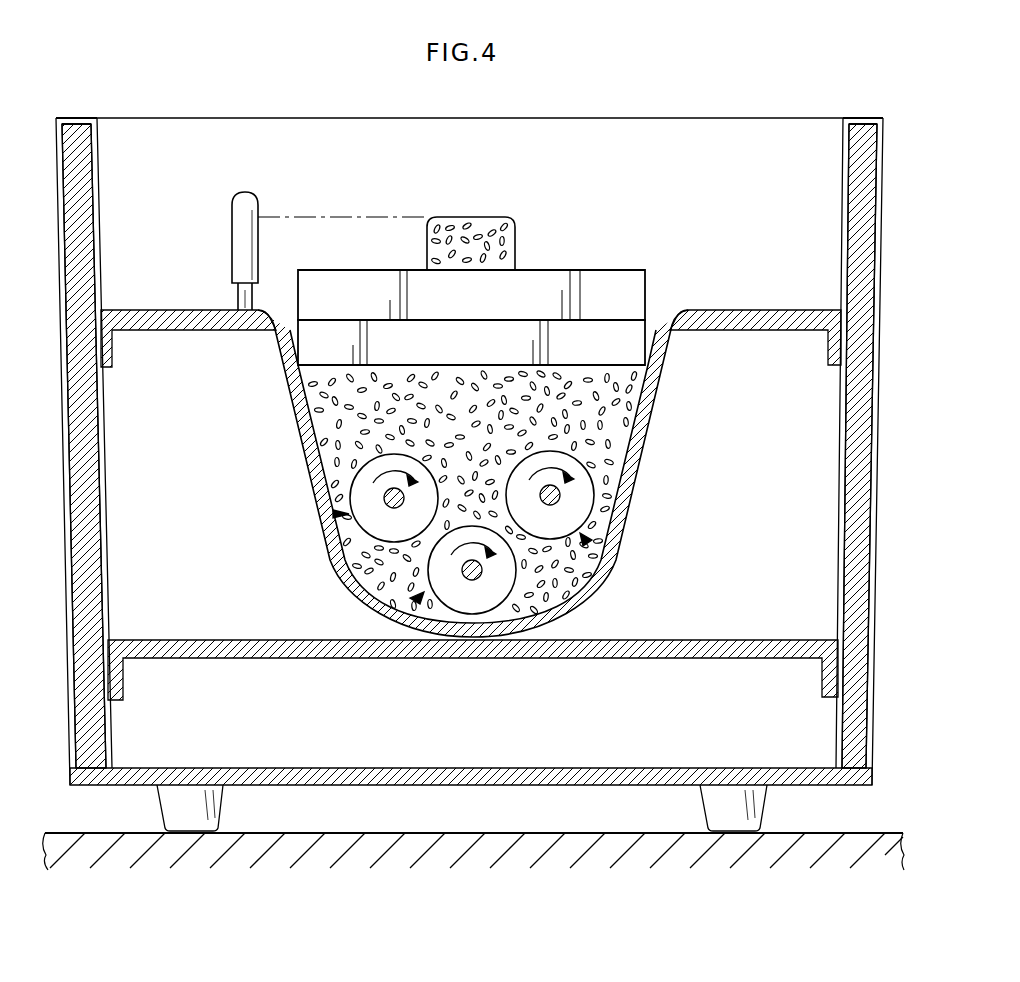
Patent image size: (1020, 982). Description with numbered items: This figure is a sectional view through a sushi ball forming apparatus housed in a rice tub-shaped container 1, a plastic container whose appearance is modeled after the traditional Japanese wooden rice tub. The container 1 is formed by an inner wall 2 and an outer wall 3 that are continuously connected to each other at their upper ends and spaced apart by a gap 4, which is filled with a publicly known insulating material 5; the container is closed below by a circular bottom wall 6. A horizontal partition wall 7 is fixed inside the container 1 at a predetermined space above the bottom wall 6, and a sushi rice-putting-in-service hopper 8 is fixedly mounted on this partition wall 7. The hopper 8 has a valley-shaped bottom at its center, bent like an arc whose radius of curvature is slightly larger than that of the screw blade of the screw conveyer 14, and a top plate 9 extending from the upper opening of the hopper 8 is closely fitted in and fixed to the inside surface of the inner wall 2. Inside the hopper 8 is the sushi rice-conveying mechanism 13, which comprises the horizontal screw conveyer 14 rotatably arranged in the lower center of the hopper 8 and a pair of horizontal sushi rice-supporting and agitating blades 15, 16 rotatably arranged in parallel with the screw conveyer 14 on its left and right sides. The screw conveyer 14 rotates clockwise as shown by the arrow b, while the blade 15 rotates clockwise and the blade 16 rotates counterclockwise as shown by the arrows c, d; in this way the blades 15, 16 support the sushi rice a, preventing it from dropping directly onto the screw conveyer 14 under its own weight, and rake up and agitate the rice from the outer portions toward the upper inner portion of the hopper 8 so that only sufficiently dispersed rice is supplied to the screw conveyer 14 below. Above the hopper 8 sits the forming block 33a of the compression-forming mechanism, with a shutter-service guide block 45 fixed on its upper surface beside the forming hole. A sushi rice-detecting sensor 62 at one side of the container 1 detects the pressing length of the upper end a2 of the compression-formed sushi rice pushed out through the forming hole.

The rice tub-shaped container 1 is at (481, 453).
The inner wall 2 is at (845, 158).
The outer wall 3 is at (885, 128).
The gap 4 is at (875, 197).
The insulating material 5 is at (868, 400).
The bottom wall 6 is at (636, 785).
The partition wall 7 is at (665, 641).
The hopper 8 is at (475, 492).
The top plate 9 is at (753, 310).
The sushi rice-conveying mechanism 13 is at (594, 495).
The screw conveyer 14 is at (472, 570).
The sushi rice-supporting and agitating blade 15 is at (473, 473).
The sushi rice-supporting and agitating blade 16 is at (603, 539).
The forming block 33a is at (612, 338).
The shutter-service guide block 45 is at (581, 278).
The sushi rice-detecting sensor 62 is at (236, 207).
The sushi rice a is at (337, 404).
The upper end of compression-formed sushi rice a2 is at (508, 217).
The arrow b is at (472, 570).
The arrow c is at (394, 498).
The arrow d is at (550, 495).